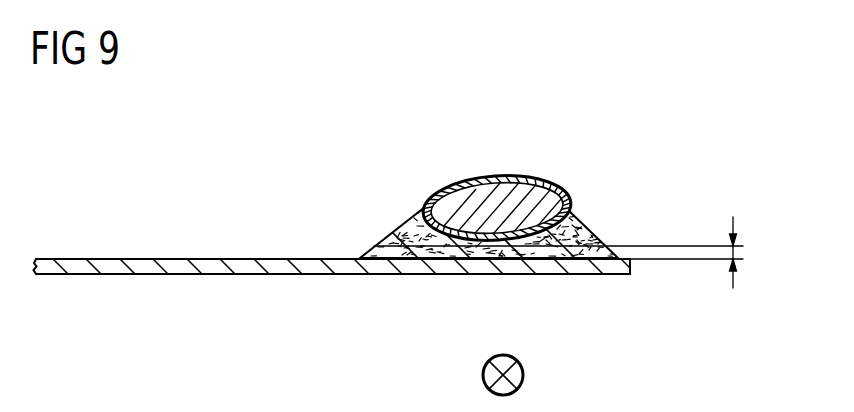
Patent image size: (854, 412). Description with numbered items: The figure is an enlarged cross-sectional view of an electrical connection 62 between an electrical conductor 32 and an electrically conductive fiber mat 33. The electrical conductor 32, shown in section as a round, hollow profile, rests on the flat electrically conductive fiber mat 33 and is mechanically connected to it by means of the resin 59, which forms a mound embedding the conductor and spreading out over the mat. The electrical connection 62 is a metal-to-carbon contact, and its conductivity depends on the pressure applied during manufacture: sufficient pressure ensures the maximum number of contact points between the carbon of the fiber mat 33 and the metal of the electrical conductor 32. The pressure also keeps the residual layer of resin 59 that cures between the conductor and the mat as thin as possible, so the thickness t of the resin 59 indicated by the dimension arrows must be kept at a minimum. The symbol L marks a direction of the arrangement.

The electrical conductor 32 is at (522, 205).
The electrically conductive fiber mat 33 is at (277, 265).
The resin 59 is at (405, 224).
The electrical connection 62 is at (479, 188).
The thickness t is at (735, 252).
The longitudinal direction L is at (524, 371).